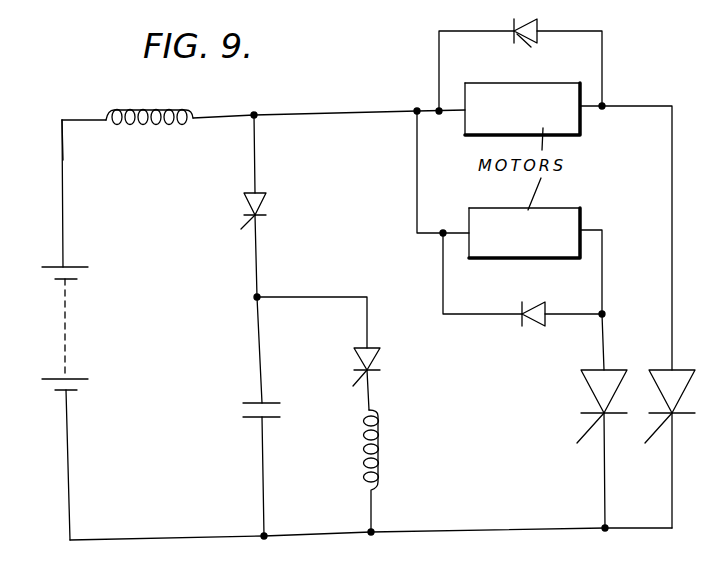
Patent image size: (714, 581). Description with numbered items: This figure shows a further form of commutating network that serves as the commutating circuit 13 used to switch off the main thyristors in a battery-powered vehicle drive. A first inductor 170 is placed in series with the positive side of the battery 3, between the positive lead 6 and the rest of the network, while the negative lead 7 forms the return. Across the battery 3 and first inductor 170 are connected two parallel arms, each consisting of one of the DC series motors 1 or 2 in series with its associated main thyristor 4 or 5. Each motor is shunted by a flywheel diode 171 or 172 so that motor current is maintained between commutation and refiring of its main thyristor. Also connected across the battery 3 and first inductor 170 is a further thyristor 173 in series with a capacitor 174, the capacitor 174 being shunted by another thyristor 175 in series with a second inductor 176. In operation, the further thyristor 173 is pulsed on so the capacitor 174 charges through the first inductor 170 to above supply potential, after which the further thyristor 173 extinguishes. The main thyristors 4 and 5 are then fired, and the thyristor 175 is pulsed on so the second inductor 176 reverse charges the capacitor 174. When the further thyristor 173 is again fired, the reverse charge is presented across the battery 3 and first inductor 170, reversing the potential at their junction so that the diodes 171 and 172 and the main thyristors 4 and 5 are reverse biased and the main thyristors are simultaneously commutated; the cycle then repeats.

The DC series motor 1 is at (470, 125).
The DC series motor 2 is at (473, 219).
The battery 3 is at (68, 326).
The main thyristor 4 is at (660, 368).
The main thyristor 5 is at (580, 372).
The positive lead 6 is at (77, 118).
The negative lead 7 is at (168, 538).
The commutating circuit 13 is at (160, 125).
The first inductor 170 is at (132, 108).
The flywheel diode 171 is at (513, 45).
The flywheel diode 172 is at (535, 305).
The further thyristor 173 is at (245, 198).
The capacitor 174 is at (243, 420).
The thyristor 175 is at (380, 358).
The second inductor 176 is at (362, 440).